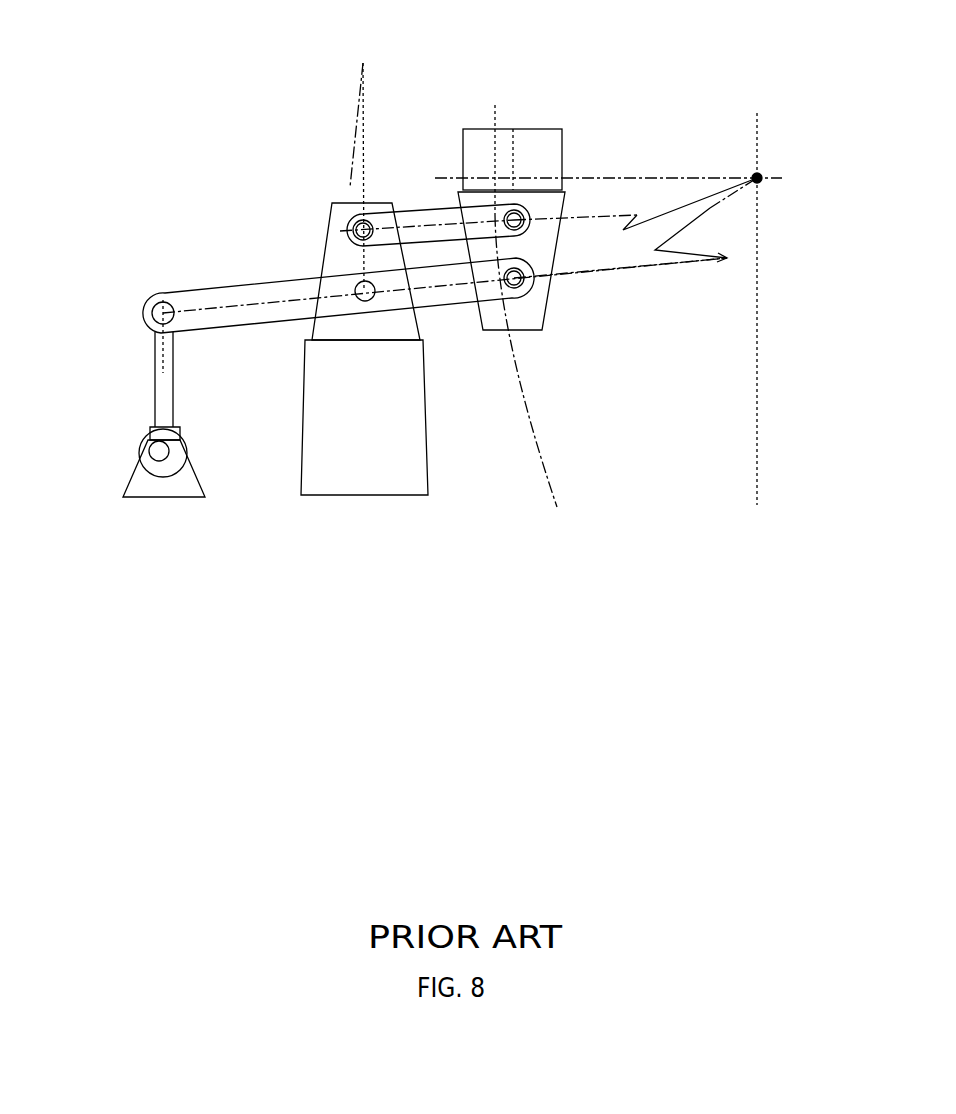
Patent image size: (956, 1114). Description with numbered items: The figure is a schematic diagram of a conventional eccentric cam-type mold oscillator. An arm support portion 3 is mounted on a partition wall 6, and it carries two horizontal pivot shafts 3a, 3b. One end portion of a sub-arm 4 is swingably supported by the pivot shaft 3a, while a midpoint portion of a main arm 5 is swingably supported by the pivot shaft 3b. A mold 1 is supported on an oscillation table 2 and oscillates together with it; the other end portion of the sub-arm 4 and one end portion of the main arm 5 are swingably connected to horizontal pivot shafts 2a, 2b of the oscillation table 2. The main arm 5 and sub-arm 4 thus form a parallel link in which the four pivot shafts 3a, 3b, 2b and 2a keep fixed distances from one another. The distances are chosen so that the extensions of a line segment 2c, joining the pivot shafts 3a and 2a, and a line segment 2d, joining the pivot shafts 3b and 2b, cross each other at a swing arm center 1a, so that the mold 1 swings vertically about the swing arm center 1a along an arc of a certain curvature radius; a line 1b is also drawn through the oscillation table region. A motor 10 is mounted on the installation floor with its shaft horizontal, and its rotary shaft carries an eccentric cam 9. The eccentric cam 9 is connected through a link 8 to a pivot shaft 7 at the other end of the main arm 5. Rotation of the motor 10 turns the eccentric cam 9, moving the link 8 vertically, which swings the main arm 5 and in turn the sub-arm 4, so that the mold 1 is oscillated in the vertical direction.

The mold 1 is at (520, 148).
The swing arm center 1a is at (760, 176).
The axis line of first member 1b is at (522, 387).
The oscillation table 2 is at (540, 253).
The pivot shaft 2a is at (520, 212).
The pivot shaft 2b is at (523, 285).
The line segment 2c is at (698, 200).
The line segment 2d is at (698, 222).
The arm support portion 3 is at (340, 259).
The pivot shaft 3a is at (352, 229).
The pivot shaft 3b is at (373, 297).
The sub-arm 4 is at (428, 222).
The main arm 5 is at (248, 313).
The partition wall 6 is at (397, 435).
The pivot shaft 7 is at (148, 309).
The link 8 is at (155, 403).
The eccentric cam 9 is at (152, 453).
The motor 10 is at (187, 473).